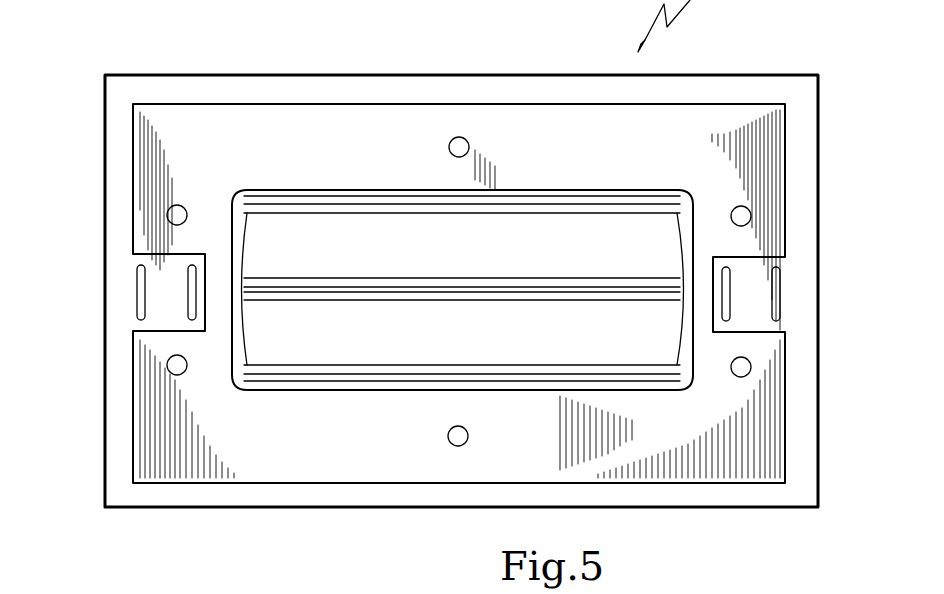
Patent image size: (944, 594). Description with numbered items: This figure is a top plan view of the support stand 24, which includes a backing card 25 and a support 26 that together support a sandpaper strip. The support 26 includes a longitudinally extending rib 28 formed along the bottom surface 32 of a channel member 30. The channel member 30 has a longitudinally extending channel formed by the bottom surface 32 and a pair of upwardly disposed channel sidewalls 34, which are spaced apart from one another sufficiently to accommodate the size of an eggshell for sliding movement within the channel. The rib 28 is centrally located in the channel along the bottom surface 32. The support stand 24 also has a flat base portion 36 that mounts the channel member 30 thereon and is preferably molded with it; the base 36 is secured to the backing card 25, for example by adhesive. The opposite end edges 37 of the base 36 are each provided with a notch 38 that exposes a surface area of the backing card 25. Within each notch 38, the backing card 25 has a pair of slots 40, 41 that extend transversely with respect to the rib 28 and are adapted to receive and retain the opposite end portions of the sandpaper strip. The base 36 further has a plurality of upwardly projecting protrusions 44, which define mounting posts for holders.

The support stand 24 is at (734, 590).
The backing card 25 is at (718, 77).
The support 26 is at (536, 182).
The rib 28 is at (462, 290).
The channel member 30 is at (258, 343).
The bottom surface 32 is at (566, 264).
The channel sidewalls 34 is at (395, 215).
The base portion 36 is at (340, 130).
The end edges 37 is at (133, 138).
The notch 38 is at (175, 272).
The slots 40 is at (140, 285).
The slots 41 is at (192, 290).
The protrusions 44 is at (167, 215).